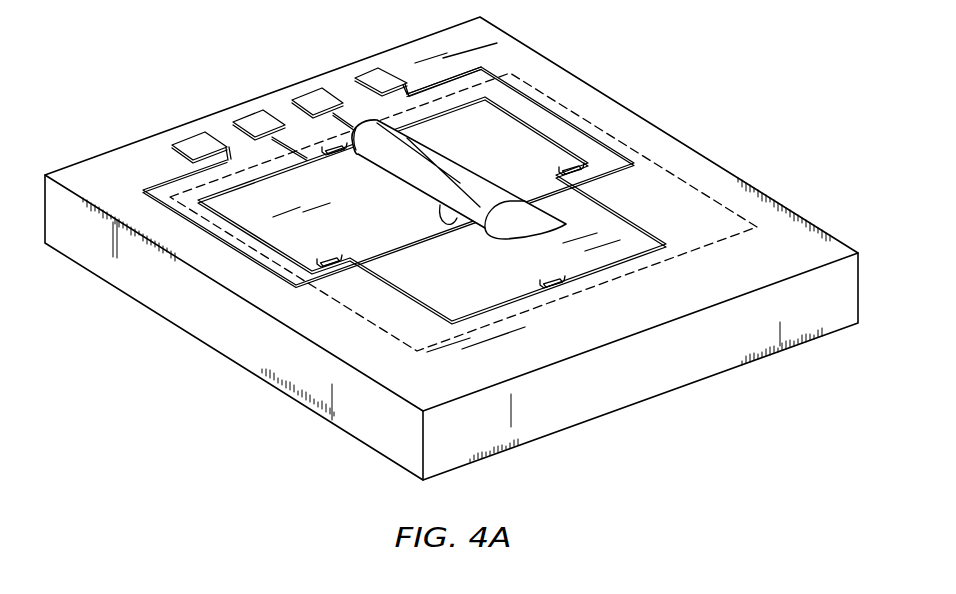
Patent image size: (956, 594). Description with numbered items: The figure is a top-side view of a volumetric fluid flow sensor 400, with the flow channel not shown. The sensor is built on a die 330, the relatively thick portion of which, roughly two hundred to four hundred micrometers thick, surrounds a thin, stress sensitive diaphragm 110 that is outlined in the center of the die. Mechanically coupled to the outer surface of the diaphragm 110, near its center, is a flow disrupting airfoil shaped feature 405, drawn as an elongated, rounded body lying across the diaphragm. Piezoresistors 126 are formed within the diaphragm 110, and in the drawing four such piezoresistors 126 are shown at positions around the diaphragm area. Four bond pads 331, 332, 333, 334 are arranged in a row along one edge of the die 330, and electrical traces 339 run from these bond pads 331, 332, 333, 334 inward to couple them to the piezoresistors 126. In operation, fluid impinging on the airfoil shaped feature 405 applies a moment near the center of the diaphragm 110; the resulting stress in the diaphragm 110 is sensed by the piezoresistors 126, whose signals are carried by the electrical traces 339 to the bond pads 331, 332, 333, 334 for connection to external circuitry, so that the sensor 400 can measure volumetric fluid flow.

The stress sensitive diaphragm 110 is at (660, 265).
The piezoresistors 126 is at (334, 154).
The die 330 is at (247, 280).
The bond pad 331 is at (197, 146).
The bond pad 332 is at (258, 118).
The bond pad 333 is at (319, 98).
The bond pad 334 is at (385, 78).
The electrical traces 339 is at (578, 132).
The volumetric fluid flow sensor 400 is at (224, 396).
The airfoil shaped feature 405 is at (423, 181).